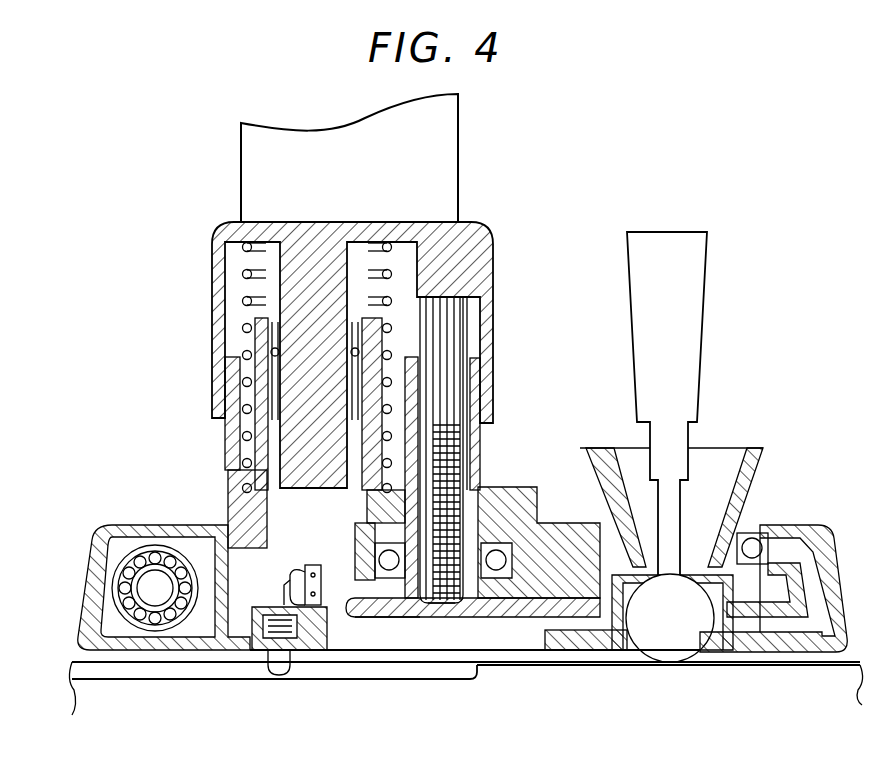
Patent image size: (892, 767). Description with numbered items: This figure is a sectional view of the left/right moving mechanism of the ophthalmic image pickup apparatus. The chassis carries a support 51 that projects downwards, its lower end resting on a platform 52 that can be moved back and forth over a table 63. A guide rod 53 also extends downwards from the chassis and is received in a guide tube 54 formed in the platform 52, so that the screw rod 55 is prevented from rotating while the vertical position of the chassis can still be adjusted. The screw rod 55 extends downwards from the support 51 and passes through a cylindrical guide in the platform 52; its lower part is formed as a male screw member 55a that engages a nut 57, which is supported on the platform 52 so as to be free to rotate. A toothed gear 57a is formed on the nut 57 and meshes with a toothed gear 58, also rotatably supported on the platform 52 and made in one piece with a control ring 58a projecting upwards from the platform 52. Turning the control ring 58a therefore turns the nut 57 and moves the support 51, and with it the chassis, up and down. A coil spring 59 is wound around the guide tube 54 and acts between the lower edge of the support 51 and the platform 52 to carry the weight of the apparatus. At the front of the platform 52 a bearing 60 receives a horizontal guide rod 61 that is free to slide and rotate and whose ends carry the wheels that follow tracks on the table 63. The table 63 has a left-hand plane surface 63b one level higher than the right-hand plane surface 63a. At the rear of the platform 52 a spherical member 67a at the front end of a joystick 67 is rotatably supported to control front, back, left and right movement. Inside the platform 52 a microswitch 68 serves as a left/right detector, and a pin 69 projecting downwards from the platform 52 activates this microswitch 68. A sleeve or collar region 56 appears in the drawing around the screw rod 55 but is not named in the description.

The support 51 is at (444, 147).
The platform 52 is at (207, 501).
The guide rod 53 is at (275, 290).
The guide tube 54 is at (250, 340).
The screw rod 55 is at (455, 301).
The male screw member 55a is at (445, 617).
The sleeve 56 is at (479, 452).
The nut 57 is at (485, 500).
The toothed gear 57a is at (402, 617).
The toothed gear 58 is at (597, 650).
The control ring 58a is at (765, 455).
The coil spring 59 is at (226, 434).
The bearing 60 is at (98, 605).
The horizontal guide rod 61 is at (152, 600).
The table 63 is at (246, 692).
The plane surface 63a is at (182, 673).
The plane surface 63b is at (540, 662).
The joystick 67 is at (688, 331).
The spherical member 67a is at (683, 662).
The microswitch 68 is at (311, 565).
The pin 69 is at (280, 675).